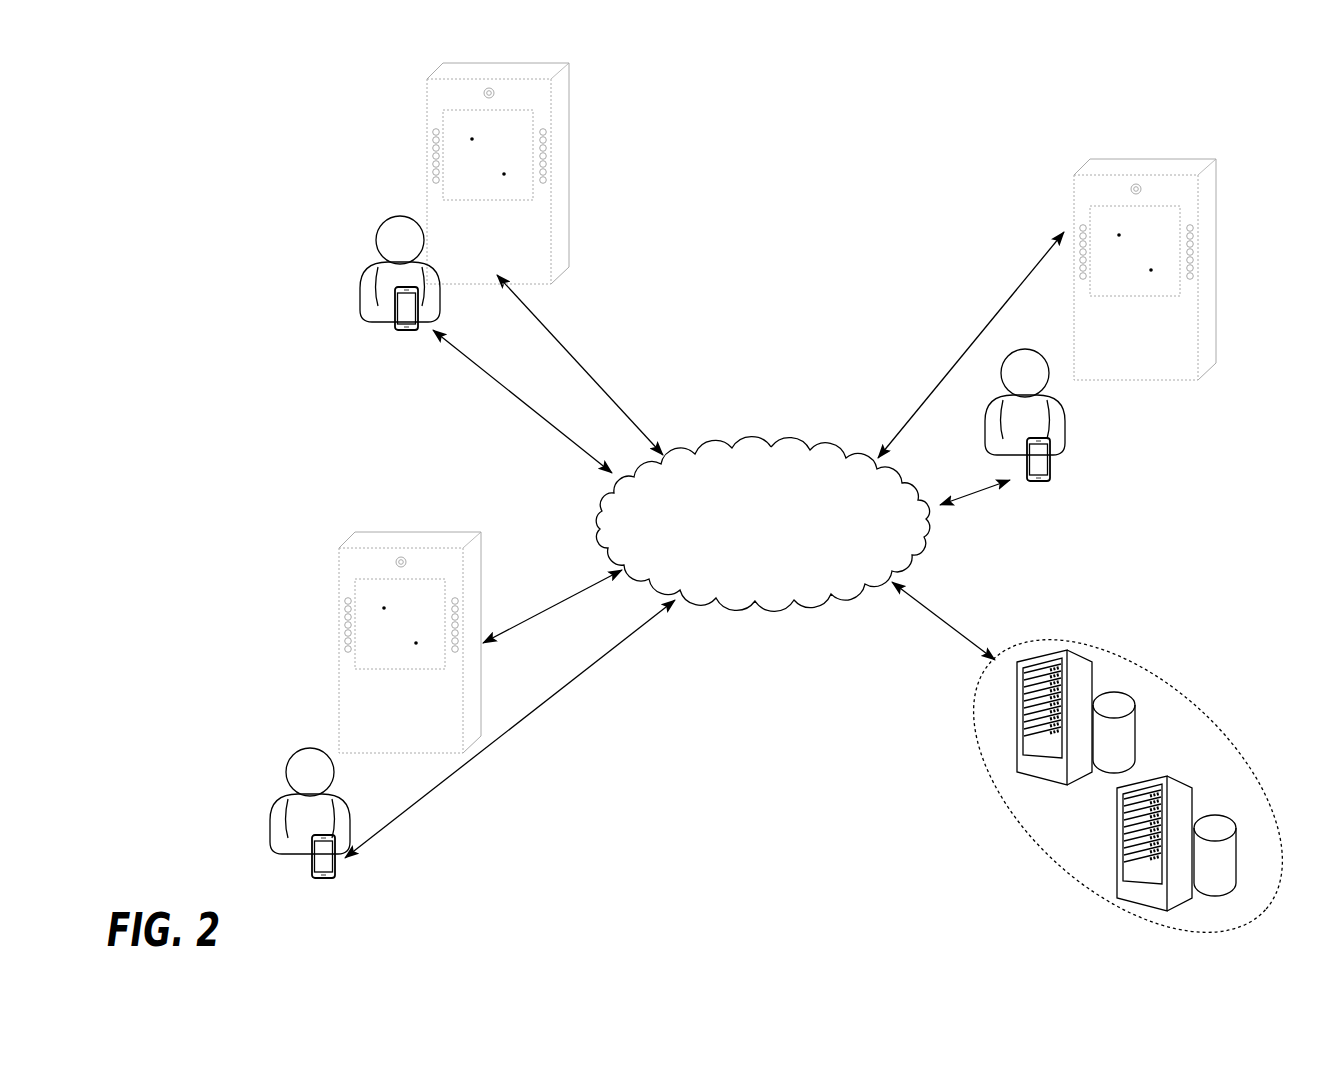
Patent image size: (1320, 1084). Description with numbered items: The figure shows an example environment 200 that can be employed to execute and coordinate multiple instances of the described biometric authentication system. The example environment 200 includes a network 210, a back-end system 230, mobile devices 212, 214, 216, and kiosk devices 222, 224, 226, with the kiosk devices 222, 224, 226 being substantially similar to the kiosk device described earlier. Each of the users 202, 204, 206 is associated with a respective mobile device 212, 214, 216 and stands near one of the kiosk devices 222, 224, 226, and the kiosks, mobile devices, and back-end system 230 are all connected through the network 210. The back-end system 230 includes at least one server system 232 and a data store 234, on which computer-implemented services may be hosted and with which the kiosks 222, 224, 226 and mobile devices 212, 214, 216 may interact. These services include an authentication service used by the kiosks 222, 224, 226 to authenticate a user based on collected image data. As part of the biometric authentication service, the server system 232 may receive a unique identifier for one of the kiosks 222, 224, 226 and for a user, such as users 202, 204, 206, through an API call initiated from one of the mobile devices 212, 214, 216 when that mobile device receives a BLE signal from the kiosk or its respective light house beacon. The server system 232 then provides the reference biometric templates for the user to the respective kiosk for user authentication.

The example environment 200 is at (290, 108).
The user 202 is at (270, 797).
The user 204 is at (363, 270).
The user 206 is at (1065, 437).
The network 210 is at (743, 603).
The mobile device 212 is at (322, 868).
The mobile device 214 is at (405, 319).
The mobile device 216 is at (1037, 474).
The kiosk device 222 is at (362, 712).
The kiosk device 224 is at (557, 256).
The kiosk device 226 is at (1202, 351).
The back-end system 230 is at (1190, 693).
The server system 232 is at (1046, 652).
The data store 234 is at (1112, 690).